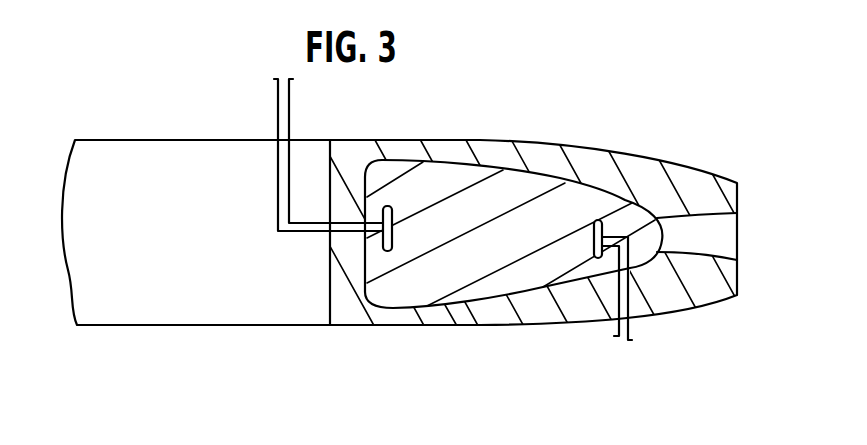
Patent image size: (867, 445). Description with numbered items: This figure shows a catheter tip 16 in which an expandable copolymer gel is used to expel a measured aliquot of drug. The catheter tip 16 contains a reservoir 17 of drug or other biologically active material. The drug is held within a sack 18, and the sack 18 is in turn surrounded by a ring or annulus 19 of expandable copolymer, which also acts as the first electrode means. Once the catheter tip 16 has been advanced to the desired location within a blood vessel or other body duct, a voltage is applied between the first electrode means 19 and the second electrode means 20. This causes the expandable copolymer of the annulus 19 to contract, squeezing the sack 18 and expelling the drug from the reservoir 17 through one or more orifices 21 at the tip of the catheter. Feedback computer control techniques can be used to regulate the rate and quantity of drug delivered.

The catheter tip 16 is at (200, 139).
The reservoir 17 is at (453, 180).
The sack 18 is at (455, 325).
The ring or annulus of expandable copolymer 19 is at (278, 110).
The second electrode means 20 is at (633, 330).
The orifices 21 is at (723, 236).